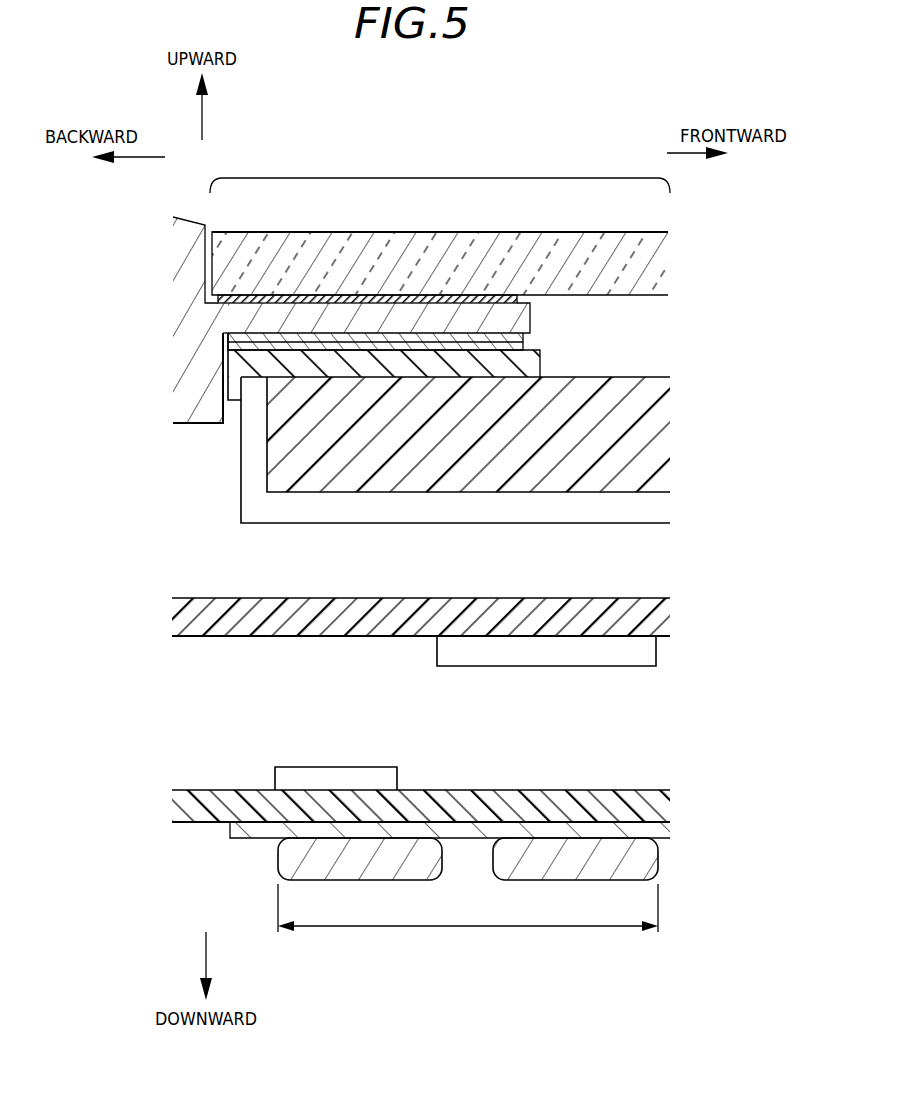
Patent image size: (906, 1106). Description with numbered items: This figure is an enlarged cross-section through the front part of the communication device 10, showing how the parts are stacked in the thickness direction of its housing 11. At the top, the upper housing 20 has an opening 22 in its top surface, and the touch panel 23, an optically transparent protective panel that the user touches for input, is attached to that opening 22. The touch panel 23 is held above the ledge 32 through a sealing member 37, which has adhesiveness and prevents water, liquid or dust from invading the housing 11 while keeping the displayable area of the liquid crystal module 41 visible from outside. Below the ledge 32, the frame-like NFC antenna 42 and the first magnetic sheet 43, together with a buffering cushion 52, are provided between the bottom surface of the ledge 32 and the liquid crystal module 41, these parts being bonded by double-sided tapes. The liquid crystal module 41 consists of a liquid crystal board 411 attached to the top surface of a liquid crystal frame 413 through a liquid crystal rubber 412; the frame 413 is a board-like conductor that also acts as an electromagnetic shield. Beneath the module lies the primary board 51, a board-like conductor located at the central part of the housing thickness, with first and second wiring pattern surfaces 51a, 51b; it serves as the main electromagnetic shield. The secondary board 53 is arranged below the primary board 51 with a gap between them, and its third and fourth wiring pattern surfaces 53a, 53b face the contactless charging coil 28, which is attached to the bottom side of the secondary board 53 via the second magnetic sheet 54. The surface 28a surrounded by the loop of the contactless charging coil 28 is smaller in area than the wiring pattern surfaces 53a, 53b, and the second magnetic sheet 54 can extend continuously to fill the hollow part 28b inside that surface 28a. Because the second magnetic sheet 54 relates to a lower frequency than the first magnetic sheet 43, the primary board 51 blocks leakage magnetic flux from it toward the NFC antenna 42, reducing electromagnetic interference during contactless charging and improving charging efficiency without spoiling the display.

The communication device 10 is at (356, 955).
The housing 11 is at (545, 953).
The upper housing 20 is at (173, 264).
The opening 22 is at (416, 178).
The touch panel 23 is at (634, 251).
The contactless charging coil 28 is at (637, 857).
The surface surrounded by the loop of the contactless charging coil 28a is at (468, 919).
The hollow part 28b is at (476, 858).
The ledge 32 is at (522, 312).
The sealing member 37 is at (405, 295).
The liquid crystal module 41 is at (507, 458).
The liquid crystal board 411 is at (627, 443).
The liquid crystal rubber 412 is at (662, 478).
The liquid crystal frame 413 is at (739, 433).
The NFC antenna 42 is at (214, 324).
The first magnetic sheet 43 is at (214, 346).
The primary board 51 is at (471, 623).
The first wiring pattern surface 51a is at (672, 598).
The second wiring pattern surface 51b is at (658, 645).
The buffering cushion 52 is at (250, 366).
The secondary board 53 is at (439, 799).
The third wiring pattern surface 53a is at (672, 790).
The fourth wiring pattern surface 53b is at (235, 826).
The second magnetic sheet 54 is at (236, 836).